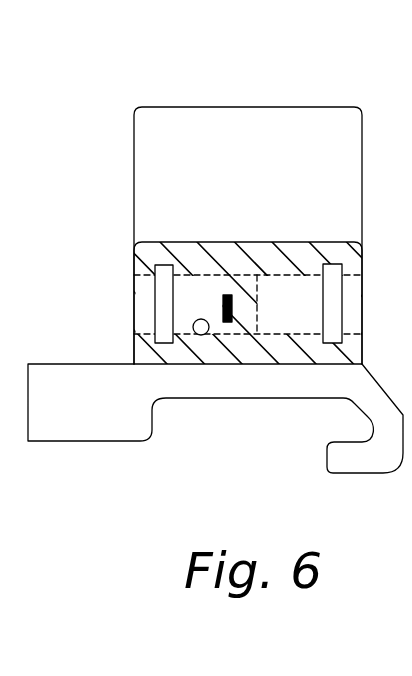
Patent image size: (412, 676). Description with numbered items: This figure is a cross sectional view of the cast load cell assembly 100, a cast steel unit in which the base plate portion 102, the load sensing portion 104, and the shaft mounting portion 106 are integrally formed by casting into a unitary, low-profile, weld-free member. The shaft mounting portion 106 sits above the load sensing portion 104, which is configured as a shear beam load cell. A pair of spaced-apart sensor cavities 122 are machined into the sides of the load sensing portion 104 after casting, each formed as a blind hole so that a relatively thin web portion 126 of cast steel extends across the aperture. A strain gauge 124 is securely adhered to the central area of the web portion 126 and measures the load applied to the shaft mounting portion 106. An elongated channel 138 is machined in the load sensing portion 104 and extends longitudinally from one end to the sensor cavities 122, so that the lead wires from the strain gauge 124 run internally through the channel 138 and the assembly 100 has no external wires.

The cast load cell assembly 100 is at (318, 92).
The base plate portion 102 is at (82, 423).
The load sensing portion 104 is at (145, 263).
The shaft mounting portion 106 is at (258, 130).
The sensor cavity 122 is at (198, 288).
The strain gauge 124 is at (226, 294).
The web portion 126 is at (248, 322).
The elongated channel 138 is at (200, 336).